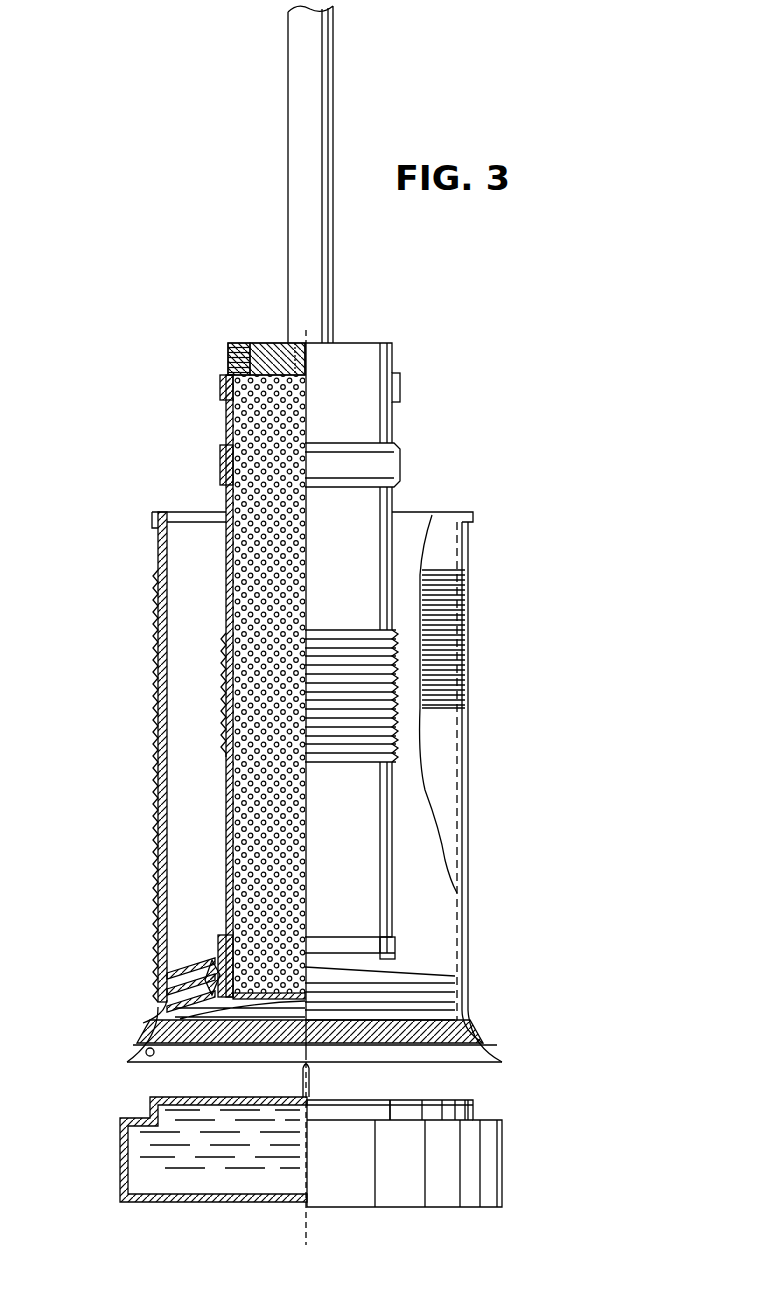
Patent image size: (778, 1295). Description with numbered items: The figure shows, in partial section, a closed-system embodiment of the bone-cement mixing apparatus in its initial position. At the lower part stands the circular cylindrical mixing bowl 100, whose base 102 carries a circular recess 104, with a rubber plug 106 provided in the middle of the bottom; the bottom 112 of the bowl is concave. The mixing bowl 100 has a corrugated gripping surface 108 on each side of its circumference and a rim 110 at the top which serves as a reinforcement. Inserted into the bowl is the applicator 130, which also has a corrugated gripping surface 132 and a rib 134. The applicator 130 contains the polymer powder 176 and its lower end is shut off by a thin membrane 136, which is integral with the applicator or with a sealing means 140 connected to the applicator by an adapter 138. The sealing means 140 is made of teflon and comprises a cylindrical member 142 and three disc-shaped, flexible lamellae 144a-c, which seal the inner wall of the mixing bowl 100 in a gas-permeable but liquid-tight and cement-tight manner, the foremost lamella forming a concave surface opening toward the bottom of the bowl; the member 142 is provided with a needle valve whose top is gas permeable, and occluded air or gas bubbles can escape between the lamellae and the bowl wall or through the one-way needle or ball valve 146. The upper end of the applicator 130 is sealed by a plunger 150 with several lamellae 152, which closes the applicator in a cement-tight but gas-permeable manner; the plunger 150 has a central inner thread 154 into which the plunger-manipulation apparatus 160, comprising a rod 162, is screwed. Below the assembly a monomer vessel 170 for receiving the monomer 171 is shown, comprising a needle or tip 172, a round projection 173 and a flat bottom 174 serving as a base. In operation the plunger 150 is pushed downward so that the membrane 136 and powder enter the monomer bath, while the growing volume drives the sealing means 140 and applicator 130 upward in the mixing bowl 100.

The mixing bowl 100 is at (468, 770).
The base 102 is at (494, 1062).
The circular recess 104 is at (160, 1040).
The rubber plug 106 is at (290, 1040).
The corrugated gripping surface 108 is at (470, 640).
The rim 110 is at (473, 516).
The bottom 112 is at (153, 1056).
The applicator 130 is at (226, 550).
The corrugated gripping surface 132 is at (362, 748).
The rib 134 is at (400, 464).
The membrane 136 is at (253, 990).
The adapter 138 is at (393, 947).
The sealing means 140 is at (450, 974).
The cylindrical member 142 is at (213, 977).
The disc-shaped flexible lamellae 144a-c is at (168, 1007).
The one-way needle or ball valve 146 is at (214, 965).
The plunger 150 is at (232, 345).
The lamellae 152 is at (228, 365).
The central inner thread 154 is at (282, 345).
The plunger-manipulation apparatus 160 is at (333, 97).
The rod 162 is at (330, 262).
The monomer vessel 170 is at (502, 1160).
The monomer 171 is at (150, 1162).
The needle or tip 172 is at (312, 1082).
The round projection 173 is at (473, 1112).
The flat bottom 174 is at (235, 1200).
The polymer powder 176 is at (248, 423).